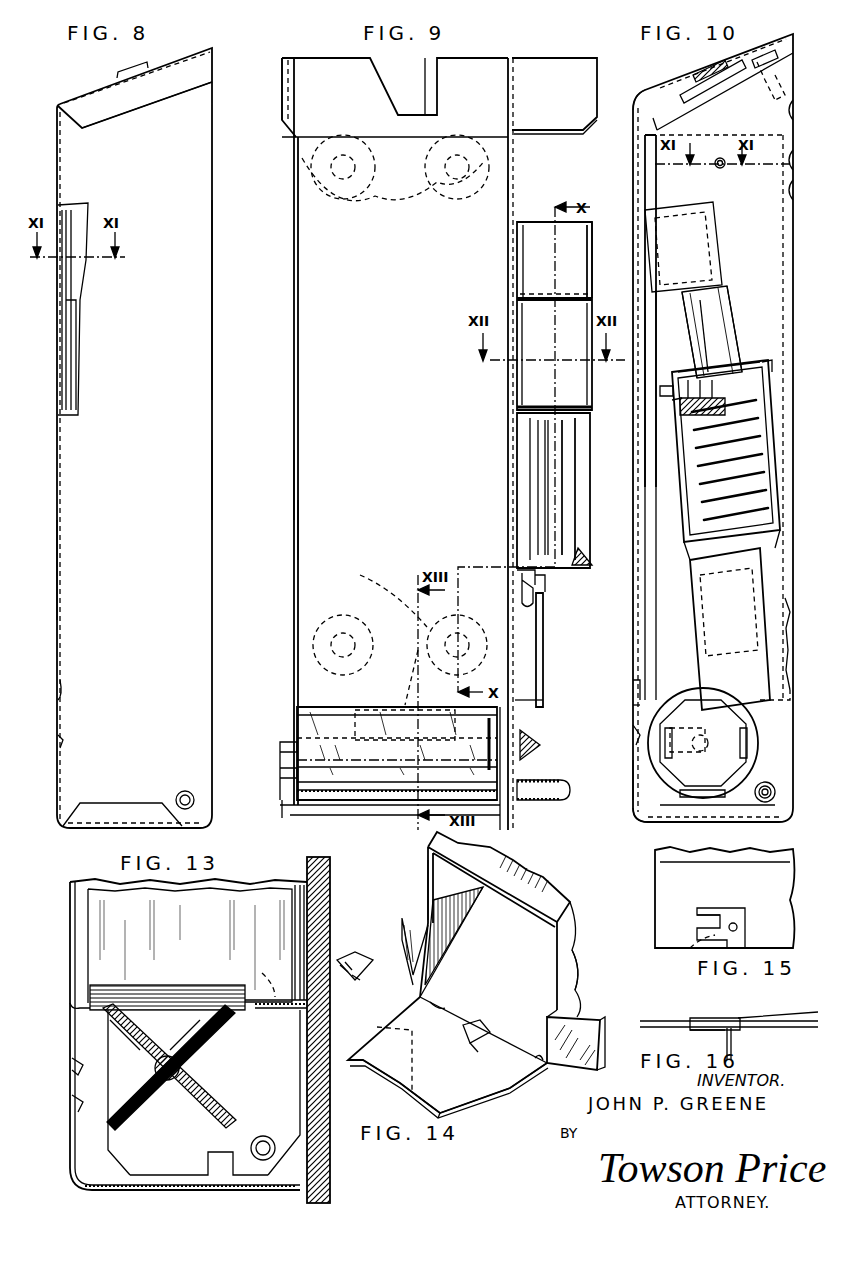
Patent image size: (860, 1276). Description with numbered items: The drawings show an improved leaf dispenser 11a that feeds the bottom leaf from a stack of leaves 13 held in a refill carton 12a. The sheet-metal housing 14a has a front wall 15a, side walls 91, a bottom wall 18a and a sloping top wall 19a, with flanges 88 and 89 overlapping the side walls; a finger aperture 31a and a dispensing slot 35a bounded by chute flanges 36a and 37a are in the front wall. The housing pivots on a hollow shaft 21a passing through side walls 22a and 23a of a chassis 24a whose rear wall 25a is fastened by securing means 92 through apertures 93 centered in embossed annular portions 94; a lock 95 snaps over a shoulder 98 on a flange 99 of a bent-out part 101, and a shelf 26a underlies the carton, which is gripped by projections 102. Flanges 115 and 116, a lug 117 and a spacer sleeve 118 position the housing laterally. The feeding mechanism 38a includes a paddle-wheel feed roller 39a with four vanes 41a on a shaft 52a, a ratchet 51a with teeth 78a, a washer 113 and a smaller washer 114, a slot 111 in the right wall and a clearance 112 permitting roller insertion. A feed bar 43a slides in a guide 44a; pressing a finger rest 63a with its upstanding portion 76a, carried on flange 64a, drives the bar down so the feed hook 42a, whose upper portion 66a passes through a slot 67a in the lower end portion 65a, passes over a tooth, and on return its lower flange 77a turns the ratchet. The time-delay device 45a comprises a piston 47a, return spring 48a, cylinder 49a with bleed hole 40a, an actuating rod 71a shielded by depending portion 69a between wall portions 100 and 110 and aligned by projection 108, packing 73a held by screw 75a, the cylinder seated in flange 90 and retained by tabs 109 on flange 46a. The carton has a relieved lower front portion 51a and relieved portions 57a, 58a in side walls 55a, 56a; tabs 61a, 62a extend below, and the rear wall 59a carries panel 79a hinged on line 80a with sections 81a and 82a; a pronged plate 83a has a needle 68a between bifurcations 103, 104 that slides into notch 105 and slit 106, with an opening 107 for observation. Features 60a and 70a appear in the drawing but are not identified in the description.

In FIG. 8, the leaf dispenser 11a is at (213, 232).
In FIG. 9, the refill carton 12a is at (418, 423).
In FIG. 10, the refill carton 12a is at (627, 177).
In FIG. 13, the refill carton 12a is at (232, 929).
In FIG. 14, the refill carton 12a is at (572, 952).
In FIG. 13, the stack of leaves 13 is at (132, 992).
In FIG. 8, the housing 14a is at (197, 468).
In FIG. 13, the housing 14a is at (70, 1060).
In FIG. 8, the front wall 15a is at (52, 558).
In FIG. 10, the front wall 15a is at (634, 770).
In FIG. 13, the front wall 15a is at (70, 932).
In FIG. 8, the bottom wall 18a is at (95, 832).
In FIG. 10, the bottom wall 18a is at (717, 822).
In FIG. 13, the bottom wall 18a is at (148, 1190).
In FIG. 8, the top wall 19a is at (95, 95).
In FIG. 10, the top wall 19a is at (758, 62).
In FIG. 8, the pivot shaft 21a is at (190, 808).
In FIG. 9, the pivot shaft 21a is at (282, 815).
In FIG. 10, the pivot shaft 21a is at (778, 797).
In FIG. 13, the pivot shaft 21a is at (288, 1113).
In FIG. 9, the left chassis side wall 22a is at (294, 520).
In FIG. 9, the right chassis side wall 23a is at (510, 190).
In FIG. 9, the chassis 24a is at (294, 477).
In FIG. 13, the chassis 24a is at (115, 1150).
In FIG. 9, the chassis rear wall 25a is at (345, 75).
In FIG. 10, the chassis rear wall 25a is at (792, 167).
In FIG. 9, the shelf 26a is at (385, 712).
In FIG. 10, the shelf 26a is at (788, 708).
In FIG. 13, the shelf 26a is at (290, 1008).
In FIG. 8, the finger aperture 31a is at (58, 310).
In FIG. 10, the slot 35a is at (633, 710).
In FIG. 10, the upper flange 36a is at (633, 684).
In FIG. 13, the upper flange 36a is at (75, 1005).
In FIG. 10, the lower flange 37a is at (630, 727).
In FIG. 13, the lower flange 37a is at (72, 1100).
In FIG. 10, the feeding mechanism 38a is at (728, 312).
In FIG. 9, the feed roller 39a is at (300, 718).
In FIG. 13, the feed roller 39a is at (203, 1092).
In FIG. 10, the bleed hole 40a is at (712, 590).
In FIG. 13, the vanes 41a is at (112, 1028).
In FIG. 9, the feed hook 42a is at (545, 655).
In FIG. 10, the feed hook 42a is at (752, 667).
In FIG. 10, the feed bar 43a is at (727, 357).
In FIG. 9, the guide 44a is at (518, 484).
In FIG. 10, the guide 44a is at (758, 388).
In FIG. 9, the time-delay device 45a is at (545, 447).
In FIG. 9, the lower guide flange 46a is at (592, 566).
In FIG. 10, the piston 47a is at (683, 364).
In FIG. 10, the return spring 48a is at (720, 460).
In FIG. 9, the cylinder 49a is at (572, 492).
In FIG. 10, the cylinder 49a is at (675, 603).
In FIG. 10, the ratchet 51a is at (738, 768).
In FIG. 14, the ratchet 51a is at (428, 880).
In FIG. 9, the roller shaft 52a is at (282, 760).
In FIG. 13, the roller shaft 52a is at (190, 1062).
In FIG. 14, the carton side wall 55a is at (451, 942).
In FIG. 14, the carton side wall 56a is at (578, 985).
In FIG. 14, the relieved portion 57a is at (425, 858).
In FIG. 14, the relieved portion 58a is at (573, 925).
In FIG. 14, the carton rear wall 59a is at (518, 982).
In FIG. 14, the floor plate 60a is at (350, 1062).
In FIG. 14, the supporting tab 61a is at (402, 925).
In FIG. 14, the supporting tab 62a is at (590, 1040).
In FIG. 9, the finger rest 63a is at (572, 298).
In FIG. 10, the feed bar flange 64a is at (726, 282).
In FIG. 9, the lower end portion 65a is at (522, 590).
In FIG. 9, the hook upper portion 66a is at (517, 597).
In FIG. 10, the slot 67a is at (753, 573).
In FIG. 9, the prong 68a is at (425, 665).
In FIG. 13, the prong 68a is at (262, 973).
In FIG. 14, the prong 68a is at (377, 1027).
In FIG. 16, the prong 68a is at (732, 1040).
In FIG. 9, the depending portion 69a is at (572, 386).
In FIG. 10, the depending portion 69a is at (660, 390).
In FIG. 14, the tab 70a is at (437, 993).
In FIG. 10, the actuating rod 71a is at (712, 338).
In FIG. 10, the packing member 73a is at (677, 412).
In FIG. 10, the screw 75a is at (730, 423).
In FIG. 9, the upstanding portion 76a is at (572, 250).
In FIG. 9, the hook lower flange 77a is at (527, 727).
In FIG. 10, the ratchet teeth 78a is at (738, 740).
In FIG. 14, the bottom panel 79a is at (505, 1092).
In FIG. 14, the hinge line 80a is at (480, 1022).
In FIG. 14, the panel section 81a is at (505, 1088).
In FIG. 14, the panel section 82a is at (445, 1118).
In FIG. 15, the panel section 82a is at (780, 928).
In FIG. 16, the panel section 82a is at (818, 1008).
In FIG. 14, the pronged plate 83a is at (355, 978).
In FIG. 15, the pronged plate 83a is at (712, 890).
In FIG. 8, the top flange 88 is at (130, 105).
In FIG. 8, the bottom flange 89 is at (115, 812).
In FIG. 10, the upper guide flange 90 is at (747, 382).
In FIG. 8, the housing side walls 91 is at (212, 296).
In FIG. 9, the securing means 92 is at (367, 195).
In FIG. 13, the securing means 92 is at (325, 915).
In FIG. 10, the apertures 93 is at (793, 643).
In FIG. 9, the embossed annular portions 94 is at (332, 615).
In FIG. 10, the embossed annular portions 94 is at (790, 605).
In FIG. 10, the lock 95 is at (657, 92).
In FIG. 10, the shoulder 98 is at (765, 87).
In FIG. 9, the flange 99 is at (430, 72).
In FIG. 9, the upstanding side wall portion 100 is at (517, 258).
In FIG. 10, the bent-out part 101 is at (790, 104).
In FIG. 9, the projections 102 is at (302, 168).
In FIG. 10, the projections 102 is at (725, 168).
In FIG. 14, the bifurcation 103 is at (340, 965).
In FIG. 15, the bifurcation 103 is at (678, 960).
In FIG. 16, the bifurcation 103 is at (690, 1028).
In FIG. 14, the bifurcation 104 is at (352, 958).
In FIG. 15, the bifurcation 104 is at (736, 910).
In FIG. 16, the bifurcation 104 is at (700, 1018).
In FIG. 14, the notch 105 is at (412, 1083).
In FIG. 14, the slit 106 is at (410, 1080).
In FIG. 14, the opening 107 is at (480, 1044).
In FIG. 10, the projection 108 is at (692, 296).
In FIG. 9, the tabs 109 is at (572, 548).
In FIG. 9, the upstanding side wall portion 110 is at (590, 275).
In FIG. 10, the upstanding side wall portion 110 is at (697, 187).
In FIG. 10, the slot 111 is at (672, 732).
In FIG. 9, the clearance 112 is at (500, 800).
In FIG. 10, the washer 113 is at (640, 830).
In FIG. 9, the washer 114 is at (500, 730).
In FIG. 9, the flange 115 is at (282, 110).
In FIG. 9, the flange 116 is at (580, 137).
In FIG. 9, the lug 117 is at (298, 810).
In FIG. 13, the lug 117 is at (210, 1152).
In FIG. 9, the sleeve 118 is at (557, 800).
In FIG. 10, the sleeve 118 is at (775, 785).